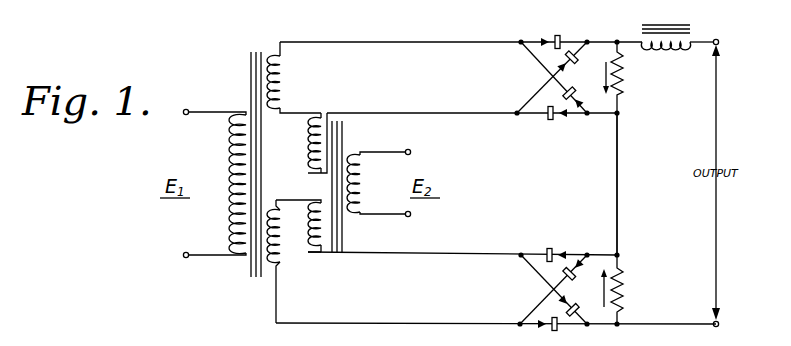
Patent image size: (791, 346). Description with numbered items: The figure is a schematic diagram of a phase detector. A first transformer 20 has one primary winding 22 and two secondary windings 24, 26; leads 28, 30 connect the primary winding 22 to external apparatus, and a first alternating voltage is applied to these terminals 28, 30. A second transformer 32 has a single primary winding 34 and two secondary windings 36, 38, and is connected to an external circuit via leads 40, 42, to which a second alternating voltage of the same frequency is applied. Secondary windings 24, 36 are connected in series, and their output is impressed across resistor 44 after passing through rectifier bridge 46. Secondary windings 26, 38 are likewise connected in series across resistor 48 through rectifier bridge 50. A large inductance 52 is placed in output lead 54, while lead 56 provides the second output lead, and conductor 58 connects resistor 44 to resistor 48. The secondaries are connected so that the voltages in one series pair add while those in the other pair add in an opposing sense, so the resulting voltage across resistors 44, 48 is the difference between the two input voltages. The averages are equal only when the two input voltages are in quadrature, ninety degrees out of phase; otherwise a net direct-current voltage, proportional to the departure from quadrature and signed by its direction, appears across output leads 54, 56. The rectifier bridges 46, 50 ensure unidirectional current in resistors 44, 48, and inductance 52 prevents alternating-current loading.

The first transformer 20 is at (248, 280).
The primary winding 22 is at (226, 196).
The secondary winding 24 is at (286, 250).
The secondary winding 26 is at (287, 77).
The lead 28 is at (200, 257).
The lead 30 is at (203, 114).
The second transformer 32 is at (350, 228).
The primary winding 34 is at (364, 183).
The secondary winding 36 is at (307, 216).
The secondary winding 38 is at (308, 142).
The lead 40 is at (386, 216).
The lead 42 is at (386, 151).
The resistor 44 is at (623, 286).
The rectifier bridge 46 is at (538, 287).
The resistor 48 is at (627, 77).
The rectifier bridge 50 is at (538, 73).
The inductance 52 is at (667, 50).
The output lead 54 is at (707, 50).
The lead 56 is at (664, 323).
The conductor 58 is at (615, 160).